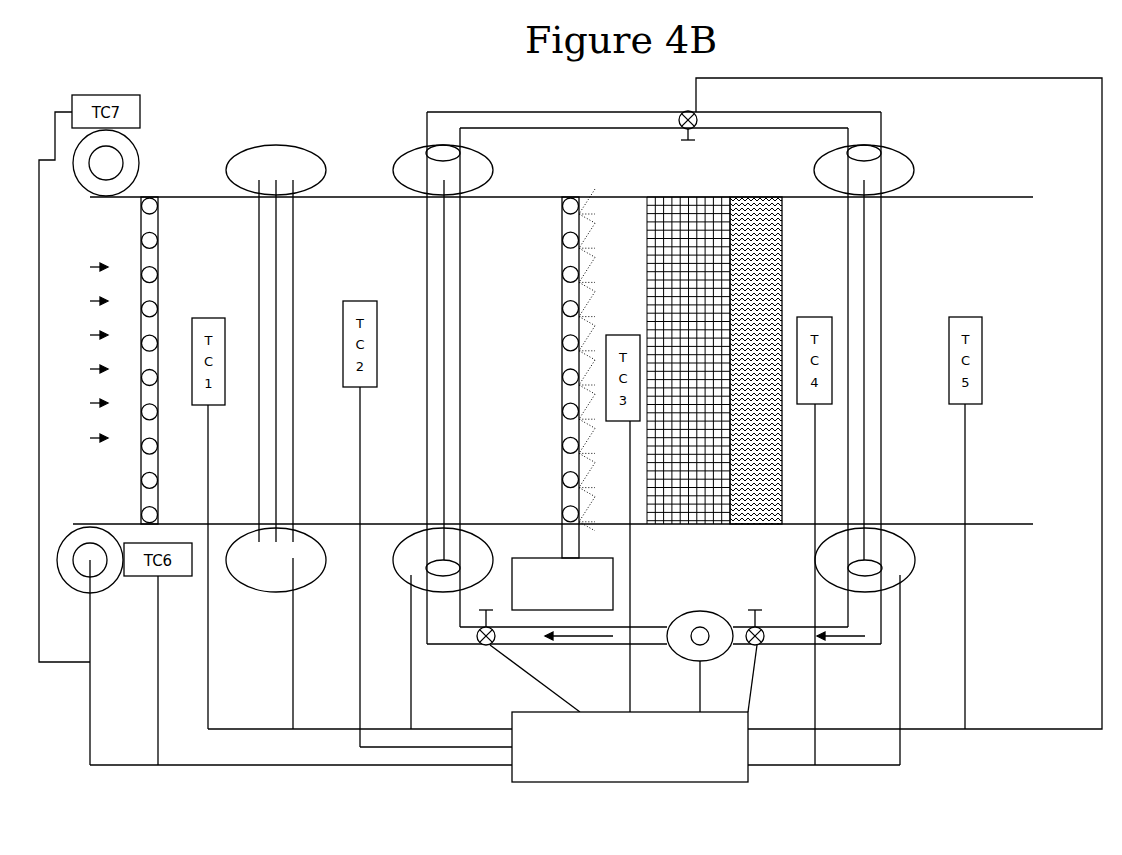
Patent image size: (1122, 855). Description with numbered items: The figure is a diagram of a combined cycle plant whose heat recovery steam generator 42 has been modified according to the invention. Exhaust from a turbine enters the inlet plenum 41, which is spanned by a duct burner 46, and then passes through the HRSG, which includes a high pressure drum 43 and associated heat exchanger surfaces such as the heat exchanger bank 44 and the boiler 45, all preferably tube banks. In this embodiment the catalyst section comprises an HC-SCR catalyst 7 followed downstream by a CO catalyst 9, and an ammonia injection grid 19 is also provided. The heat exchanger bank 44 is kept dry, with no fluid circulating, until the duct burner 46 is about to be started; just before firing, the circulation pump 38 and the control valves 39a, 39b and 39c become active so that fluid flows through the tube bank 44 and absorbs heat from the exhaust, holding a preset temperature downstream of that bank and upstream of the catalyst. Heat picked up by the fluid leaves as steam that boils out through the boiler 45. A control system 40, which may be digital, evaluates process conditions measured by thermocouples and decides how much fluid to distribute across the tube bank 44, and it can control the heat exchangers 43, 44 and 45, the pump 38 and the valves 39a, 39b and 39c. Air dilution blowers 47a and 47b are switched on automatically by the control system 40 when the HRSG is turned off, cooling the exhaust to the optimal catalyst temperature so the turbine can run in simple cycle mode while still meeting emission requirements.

The HC-SCR catalyst 7 is at (600, 373).
The CO catalyst 9 is at (767, 360).
The ammonia injection grid 19 is at (562, 584).
The circulation pump 38 is at (700, 650).
The control valve 39a is at (528, 661).
The control valve 39b is at (764, 650).
The control valve 39c is at (692, 140).
The control system 40 is at (648, 747).
The inlet plenum 41 is at (99, 335).
The heat recovery steam generator 42 is at (553, 349).
The high pressure drum 43 is at (276, 425).
The heat exchanger bank 44 is at (443, 420).
The boiler 45 is at (864, 438).
The duct burner 46 is at (168, 360).
The air dilution blower 47a is at (96, 568).
The air dilution blower 47b is at (121, 163).